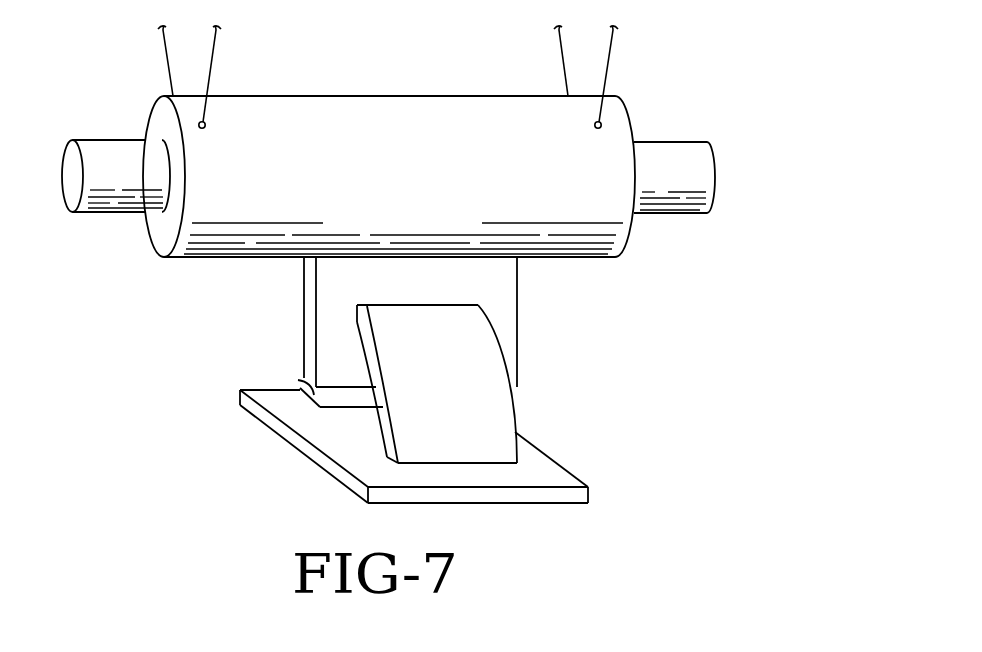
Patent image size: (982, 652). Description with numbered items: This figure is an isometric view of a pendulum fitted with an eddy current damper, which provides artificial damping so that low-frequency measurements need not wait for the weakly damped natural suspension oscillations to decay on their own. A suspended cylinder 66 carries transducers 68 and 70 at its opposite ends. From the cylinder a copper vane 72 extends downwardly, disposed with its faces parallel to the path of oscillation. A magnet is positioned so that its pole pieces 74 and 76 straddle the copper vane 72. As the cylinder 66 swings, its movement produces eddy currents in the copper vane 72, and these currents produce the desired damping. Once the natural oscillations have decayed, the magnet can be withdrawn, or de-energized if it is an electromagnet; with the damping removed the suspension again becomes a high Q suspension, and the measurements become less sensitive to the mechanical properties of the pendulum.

The suspended cylinder 66 is at (396, 110).
The transducer 68 is at (118, 155).
The transducer 70 is at (677, 150).
The copper vane 72 is at (510, 330).
The pole piece 74 is at (504, 416).
The pole piece 76 is at (312, 394).